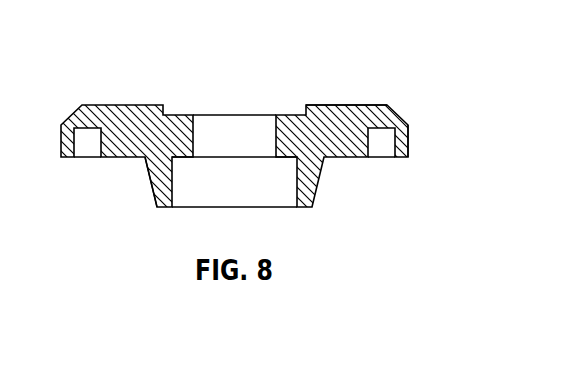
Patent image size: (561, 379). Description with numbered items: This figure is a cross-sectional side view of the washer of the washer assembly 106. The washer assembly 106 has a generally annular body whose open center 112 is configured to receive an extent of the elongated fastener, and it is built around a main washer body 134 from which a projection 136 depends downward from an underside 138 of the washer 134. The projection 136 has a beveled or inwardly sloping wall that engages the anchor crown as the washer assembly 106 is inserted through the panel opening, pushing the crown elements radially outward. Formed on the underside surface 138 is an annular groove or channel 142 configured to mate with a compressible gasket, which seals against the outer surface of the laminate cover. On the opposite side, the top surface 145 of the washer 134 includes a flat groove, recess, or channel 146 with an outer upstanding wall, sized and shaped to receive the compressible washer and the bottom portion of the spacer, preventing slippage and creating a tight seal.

The washer assembly 106 is at (313, 80).
The open center 112 is at (237, 134).
The main washer body 134 is at (410, 145).
The projection 136 is at (152, 191).
The underside 138 is at (352, 162).
The annular groove 142 is at (88, 148).
The top surface 145 is at (366, 104).
The flat groove 146 is at (176, 111).